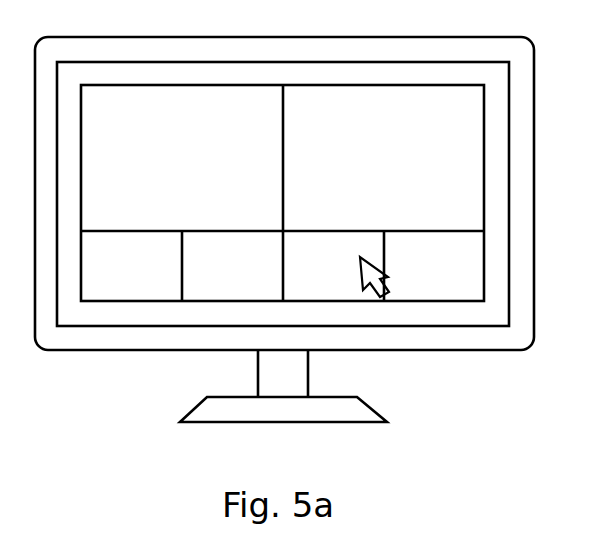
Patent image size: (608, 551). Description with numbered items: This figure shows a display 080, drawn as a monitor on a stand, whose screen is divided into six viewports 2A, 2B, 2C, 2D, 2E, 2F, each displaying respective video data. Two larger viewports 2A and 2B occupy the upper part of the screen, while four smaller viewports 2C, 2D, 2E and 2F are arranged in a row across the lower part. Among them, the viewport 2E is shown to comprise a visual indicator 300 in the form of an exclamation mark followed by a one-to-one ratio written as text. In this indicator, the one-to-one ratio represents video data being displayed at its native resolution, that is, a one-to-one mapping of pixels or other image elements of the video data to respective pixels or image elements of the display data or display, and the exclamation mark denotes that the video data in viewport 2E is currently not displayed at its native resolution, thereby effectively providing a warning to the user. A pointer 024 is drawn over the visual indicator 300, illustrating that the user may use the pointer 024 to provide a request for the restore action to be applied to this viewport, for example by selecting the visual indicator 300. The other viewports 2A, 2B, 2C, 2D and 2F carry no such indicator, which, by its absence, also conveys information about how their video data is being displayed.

The display device 080 is at (467, 350).
The visual indicator 300 is at (363, 223).
The pointer 024 is at (381, 300).
The viewport 2A is at (121, 118).
The viewport 2B is at (323, 118).
The viewport 2C is at (121, 263).
The viewport 2D is at (222, 263).
The viewport 2E is at (321, 263).
The viewport 2F is at (420, 263).